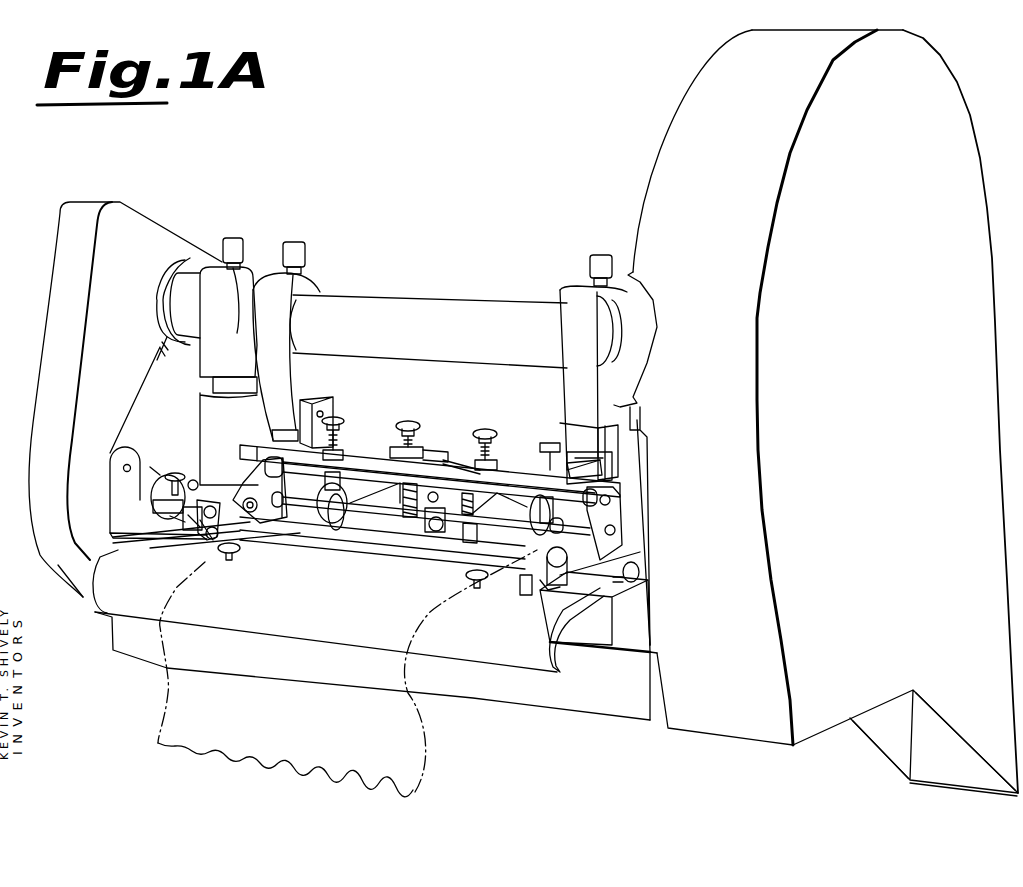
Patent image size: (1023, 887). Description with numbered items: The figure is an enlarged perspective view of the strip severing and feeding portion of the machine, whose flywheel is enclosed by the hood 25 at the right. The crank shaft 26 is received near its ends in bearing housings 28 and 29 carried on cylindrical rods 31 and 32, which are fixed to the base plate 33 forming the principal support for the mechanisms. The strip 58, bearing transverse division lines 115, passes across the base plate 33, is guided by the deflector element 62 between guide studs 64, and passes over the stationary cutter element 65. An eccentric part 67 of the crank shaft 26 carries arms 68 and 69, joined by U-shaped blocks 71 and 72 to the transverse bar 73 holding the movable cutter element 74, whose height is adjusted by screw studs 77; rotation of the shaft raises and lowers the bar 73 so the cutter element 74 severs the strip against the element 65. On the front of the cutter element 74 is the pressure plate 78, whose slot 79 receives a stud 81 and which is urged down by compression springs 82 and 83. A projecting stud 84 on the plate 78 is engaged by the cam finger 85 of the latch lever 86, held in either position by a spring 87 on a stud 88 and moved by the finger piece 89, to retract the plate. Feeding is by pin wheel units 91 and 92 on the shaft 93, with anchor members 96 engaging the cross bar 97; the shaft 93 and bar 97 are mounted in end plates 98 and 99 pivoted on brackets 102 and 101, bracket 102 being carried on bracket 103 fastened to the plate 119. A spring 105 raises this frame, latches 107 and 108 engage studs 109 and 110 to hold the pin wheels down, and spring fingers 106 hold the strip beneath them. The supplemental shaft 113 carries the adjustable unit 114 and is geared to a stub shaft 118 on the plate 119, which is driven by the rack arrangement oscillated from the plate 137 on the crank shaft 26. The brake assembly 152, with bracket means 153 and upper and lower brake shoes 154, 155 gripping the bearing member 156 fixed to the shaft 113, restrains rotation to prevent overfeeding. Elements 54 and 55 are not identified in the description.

The hood 25 is at (680, 110).
The crank shaft 26 is at (170, 297).
The bearing housing 28 is at (245, 270).
The bearing housing 29 is at (636, 315).
The cylindrical rod 31 is at (212, 384).
The cylindrical rod 32 is at (641, 413).
The plate 33 is at (650, 593).
The bar 54 is at (637, 555).
The knob 55 is at (641, 572).
The strip 58 is at (425, 768).
The deflector element 62 is at (457, 655).
The guide studs 64 is at (231, 560).
The stationary cutter element 65 is at (352, 533).
The eccentric part 67 is at (421, 298).
The arm 68 is at (306, 280).
The arm 69 is at (575, 297).
The U-shaped block 71 is at (326, 400).
The U-shaped block 72 is at (567, 421).
The transverse bar 73 is at (622, 483).
The cutter element 74 is at (288, 528).
The screw studs 77 is at (485, 428).
The pressure plate 78 is at (370, 527).
The slot 79 is at (445, 500).
The stud 81 is at (450, 512).
The compression spring 82 is at (402, 492).
The compression spring 83 is at (500, 478).
The projecting stud 84 is at (432, 497).
The cam finger 85 is at (457, 522).
The latch lever 86 is at (432, 441).
The spring 87 is at (428, 455).
The stud 88 is at (440, 460).
The finger piece 89 is at (432, 445).
The pin wheel unit 91 is at (320, 530).
The pin wheel unit 92 is at (567, 540).
The shaft 93 is at (484, 534).
The anchor members 96 is at (338, 485).
The cross bar 97 is at (358, 468).
The end plate 98 is at (250, 515).
The end plate 99 is at (622, 515).
The bracket 101 is at (591, 595).
The bracket 102 is at (212, 505).
The bracket 103 is at (118, 499).
The spring 105 is at (250, 530).
The spring fingers 106 is at (332, 528).
The latch 107 is at (200, 498).
The latch 108 is at (522, 575).
The stud 109 is at (200, 522).
The stud 110 is at (548, 592).
The supplemental shaft 113 is at (146, 492).
The unit 114 is at (157, 465).
The transverse division lines 115 is at (325, 694).
The stub shaft 118 is at (122, 467).
The plate 119 is at (143, 417).
The plate 137 is at (170, 279).
The brake assembly 152 is at (209, 465).
The bracket means 153 is at (190, 516).
The upper brake shoe 154 is at (176, 476).
The lower brake shoe 155 is at (172, 517).
The bearing member 156 is at (193, 478).